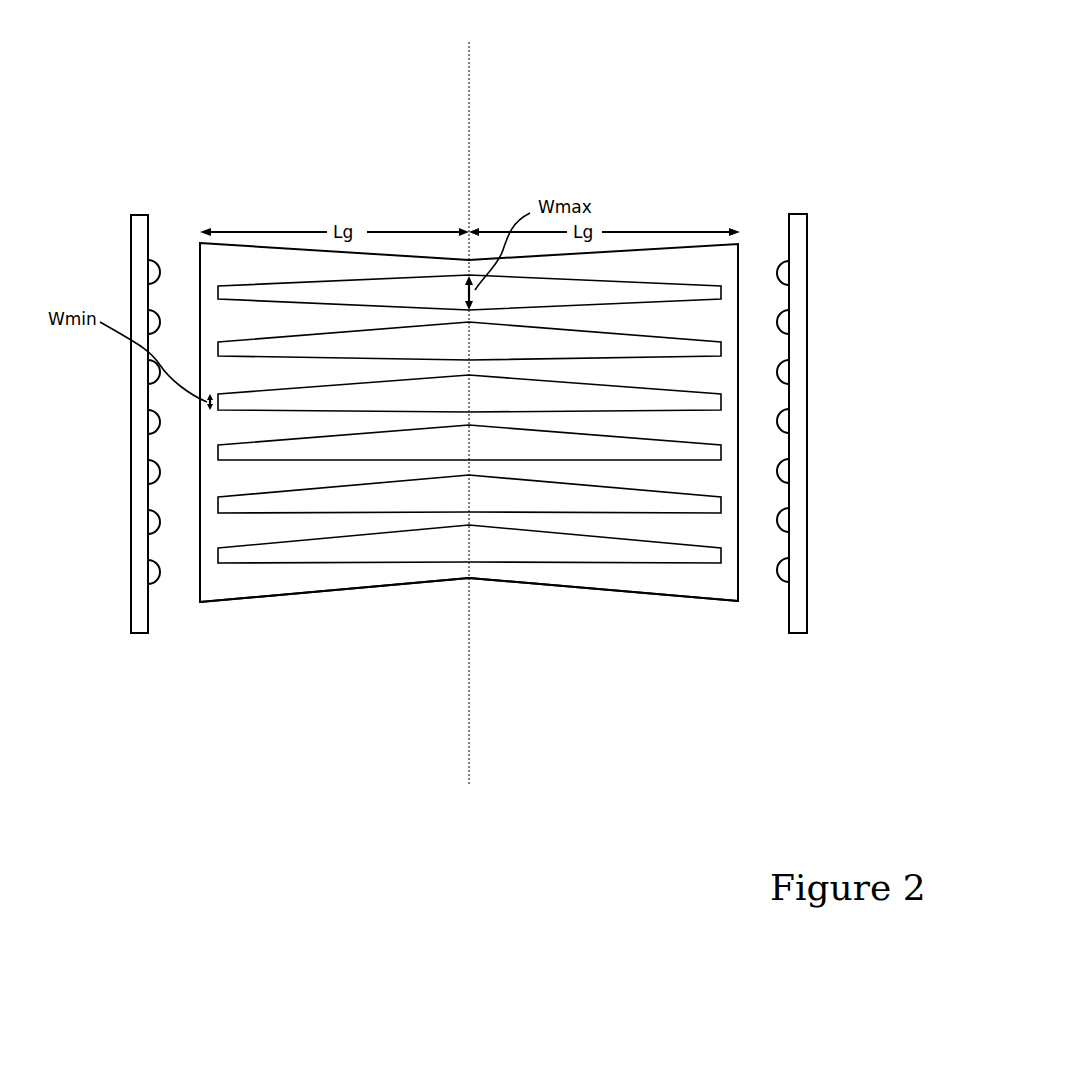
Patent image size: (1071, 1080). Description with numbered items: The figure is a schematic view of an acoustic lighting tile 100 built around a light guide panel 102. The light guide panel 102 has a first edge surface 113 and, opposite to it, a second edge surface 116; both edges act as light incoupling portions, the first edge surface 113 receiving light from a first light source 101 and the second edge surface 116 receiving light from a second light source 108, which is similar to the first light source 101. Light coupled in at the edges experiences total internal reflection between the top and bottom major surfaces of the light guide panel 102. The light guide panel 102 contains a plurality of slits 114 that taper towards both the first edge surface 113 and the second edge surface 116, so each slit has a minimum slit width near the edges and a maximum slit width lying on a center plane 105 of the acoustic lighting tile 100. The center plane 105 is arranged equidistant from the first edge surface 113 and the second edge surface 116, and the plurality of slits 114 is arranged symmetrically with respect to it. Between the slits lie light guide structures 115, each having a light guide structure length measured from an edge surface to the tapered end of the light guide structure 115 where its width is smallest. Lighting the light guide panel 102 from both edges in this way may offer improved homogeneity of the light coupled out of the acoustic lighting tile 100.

The acoustic lighting tile 100 is at (772, 92).
The first light source 101 is at (140, 303).
The light guide panel 102 is at (267, 587).
The center plane 105 is at (469, 62).
The second light source 108 is at (802, 307).
The first edge surface 113 is at (198, 257).
The plurality of slits 114 is at (602, 552).
The light guide structure 115 is at (443, 573).
The second edge surface 116 is at (740, 266).